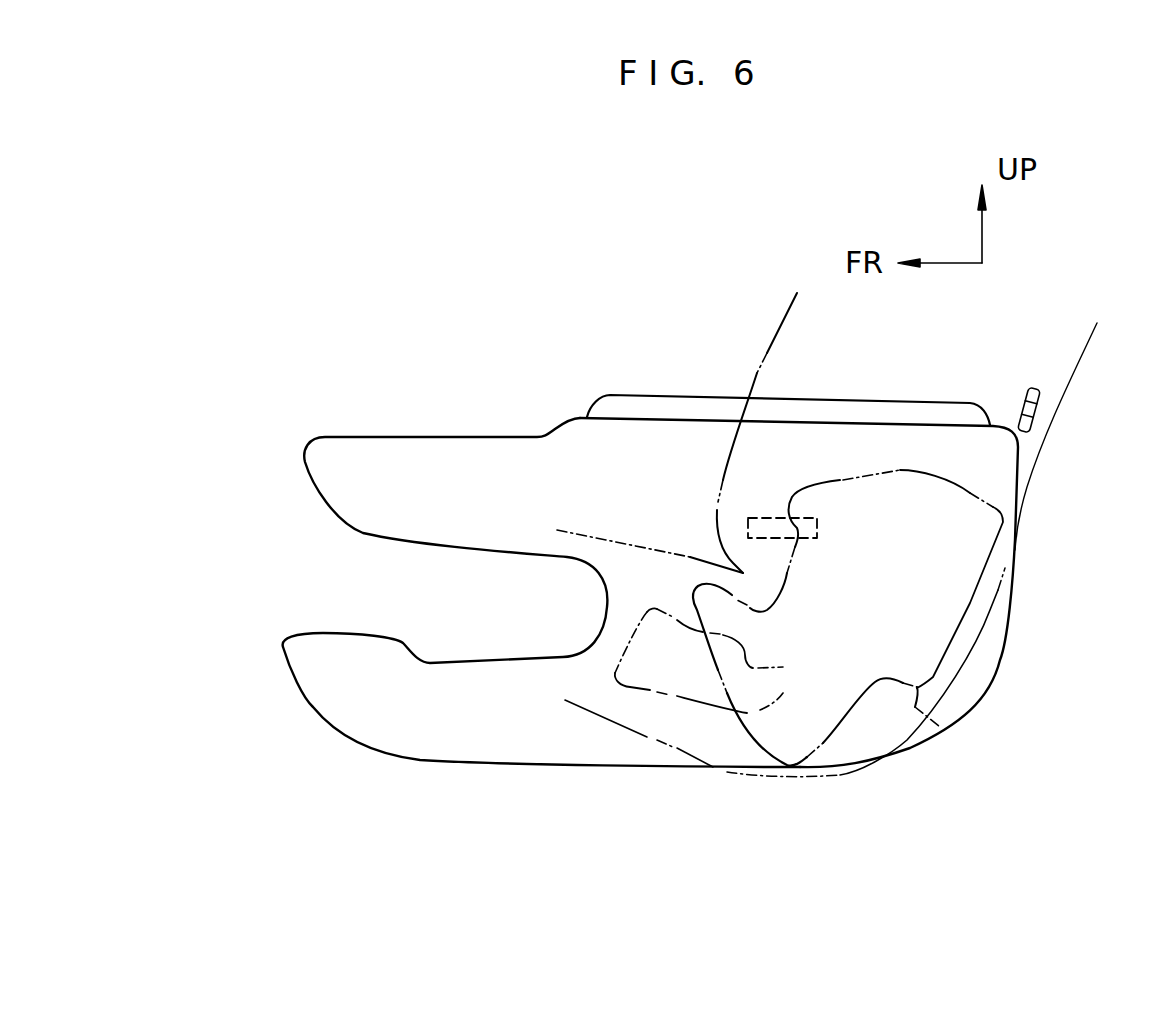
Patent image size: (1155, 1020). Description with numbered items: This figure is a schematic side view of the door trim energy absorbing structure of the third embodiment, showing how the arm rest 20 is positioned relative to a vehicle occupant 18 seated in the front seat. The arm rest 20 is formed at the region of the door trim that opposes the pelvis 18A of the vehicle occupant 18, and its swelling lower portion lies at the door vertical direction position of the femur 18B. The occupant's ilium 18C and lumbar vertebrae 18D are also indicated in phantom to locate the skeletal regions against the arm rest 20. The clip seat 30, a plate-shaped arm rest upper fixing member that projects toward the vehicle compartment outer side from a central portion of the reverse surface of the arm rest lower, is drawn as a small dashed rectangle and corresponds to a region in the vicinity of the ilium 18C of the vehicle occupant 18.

The vehicle occupant 18 is at (777, 323).
The pelvis 18A is at (925, 712).
The femur 18B is at (648, 683).
The ilium 18C is at (793, 492).
The lumbar vertebrae 18D is at (1036, 411).
The arm rest 20 is at (472, 436).
The clip seat 30 is at (817, 530).